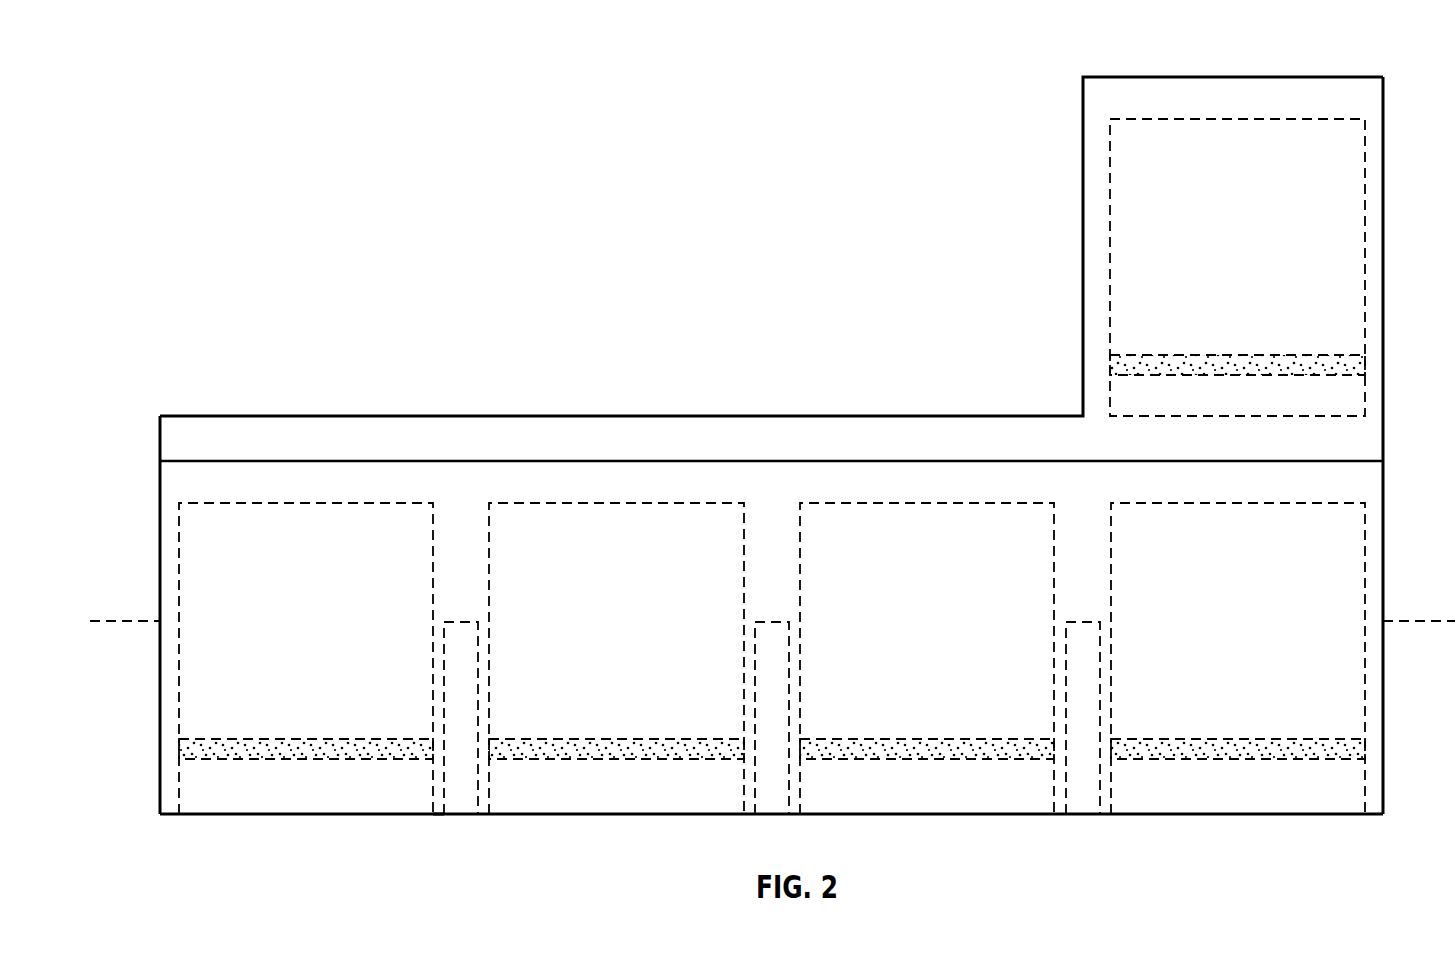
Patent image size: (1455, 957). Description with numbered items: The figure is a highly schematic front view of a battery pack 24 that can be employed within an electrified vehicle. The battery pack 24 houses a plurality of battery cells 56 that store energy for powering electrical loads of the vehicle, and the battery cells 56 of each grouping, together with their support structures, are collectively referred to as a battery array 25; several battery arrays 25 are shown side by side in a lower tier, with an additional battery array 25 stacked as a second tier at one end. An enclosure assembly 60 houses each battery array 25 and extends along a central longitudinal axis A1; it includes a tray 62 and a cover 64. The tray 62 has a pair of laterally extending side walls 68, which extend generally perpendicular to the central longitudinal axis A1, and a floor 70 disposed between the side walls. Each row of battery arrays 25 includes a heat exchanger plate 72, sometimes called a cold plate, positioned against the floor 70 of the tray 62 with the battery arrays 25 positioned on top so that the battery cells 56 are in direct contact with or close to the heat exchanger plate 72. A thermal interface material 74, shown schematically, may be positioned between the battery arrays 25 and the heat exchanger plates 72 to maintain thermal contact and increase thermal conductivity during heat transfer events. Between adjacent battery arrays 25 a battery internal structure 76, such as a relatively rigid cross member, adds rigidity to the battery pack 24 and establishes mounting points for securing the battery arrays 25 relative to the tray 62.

The battery pack 24 is at (757, 341).
The battery array 25 is at (320, 498).
The battery cell 56 is at (322, 636).
The enclosure assembly 60 is at (156, 440).
The tray 62 is at (156, 770).
The cover 64 is at (193, 413).
The laterally extending side wall 68 is at (158, 680).
The floor 70 is at (430, 813).
The heat exchanger plate 72 is at (233, 790).
The thermal interface material 74 is at (262, 750).
The battery internal structure 76 is at (453, 630).
The central longitudinal axis A1 is at (130, 620).